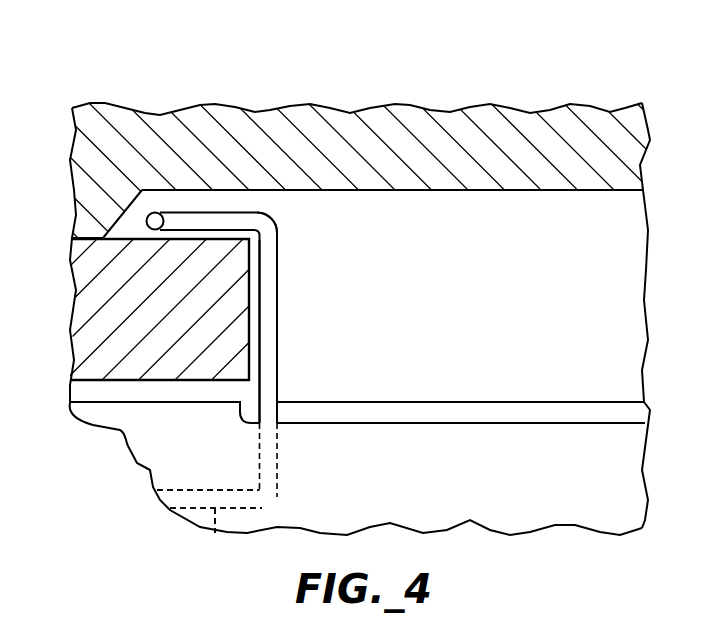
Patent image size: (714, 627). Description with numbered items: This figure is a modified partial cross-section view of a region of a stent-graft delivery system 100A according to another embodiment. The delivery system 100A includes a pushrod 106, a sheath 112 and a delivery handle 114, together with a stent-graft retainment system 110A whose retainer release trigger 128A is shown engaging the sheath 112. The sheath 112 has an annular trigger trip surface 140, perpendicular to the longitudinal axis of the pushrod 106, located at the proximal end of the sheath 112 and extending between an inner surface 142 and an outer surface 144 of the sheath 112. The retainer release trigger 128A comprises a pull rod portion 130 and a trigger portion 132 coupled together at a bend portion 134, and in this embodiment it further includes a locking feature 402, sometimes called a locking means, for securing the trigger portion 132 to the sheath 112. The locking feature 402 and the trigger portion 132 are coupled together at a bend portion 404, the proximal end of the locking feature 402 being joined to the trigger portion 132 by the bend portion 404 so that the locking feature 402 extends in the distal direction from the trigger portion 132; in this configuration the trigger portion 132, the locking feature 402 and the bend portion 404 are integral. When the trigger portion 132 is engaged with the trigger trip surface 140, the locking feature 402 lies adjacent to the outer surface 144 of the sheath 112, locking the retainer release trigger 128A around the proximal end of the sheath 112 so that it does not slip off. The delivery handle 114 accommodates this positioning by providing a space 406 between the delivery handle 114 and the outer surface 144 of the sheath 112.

The stent-graft delivery system 100A is at (293, 65).
The delivery handle 114 is at (420, 165).
The outer surface 144 is at (128, 242).
The sheath 112 is at (182, 314).
The inner surface 142 is at (128, 382).
The pushrod 106 is at (497, 494).
The locking feature 402 is at (213, 218).
The space 406 is at (157, 197).
The bend portion 404 is at (265, 230).
The trigger portion 132 is at (272, 293).
The retainer release trigger 128A is at (303, 310).
The trigger trip surface 140 is at (240, 348).
The stent-graft retainment system 110A is at (278, 476).
The bend portion 134 is at (257, 497).
The pull rod portion 130 is at (215, 533).